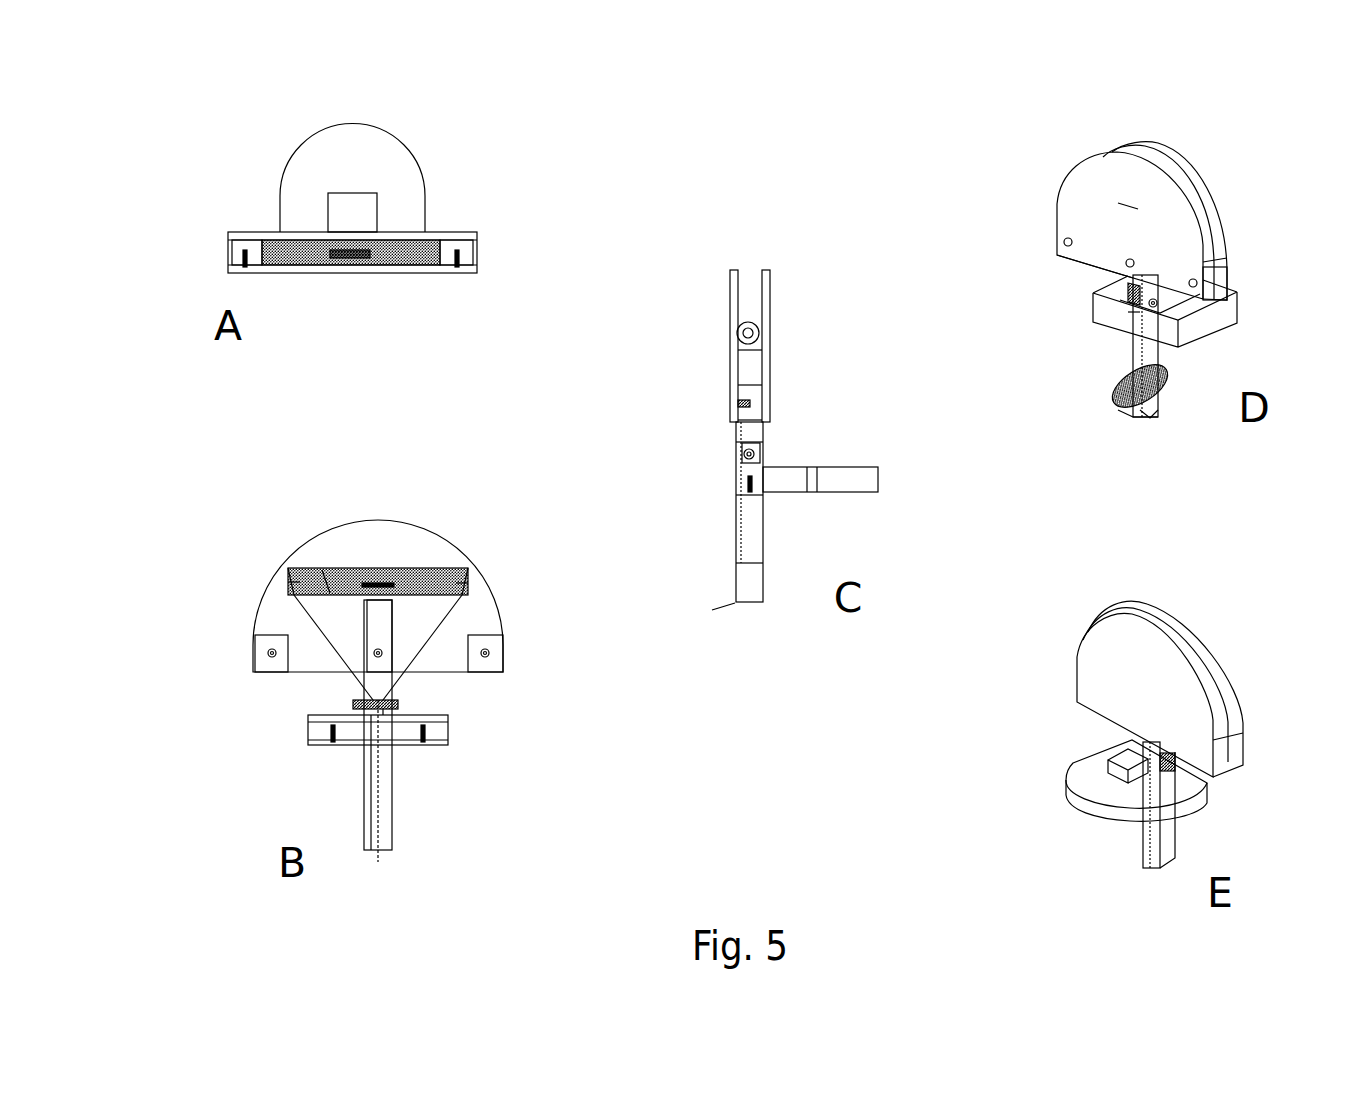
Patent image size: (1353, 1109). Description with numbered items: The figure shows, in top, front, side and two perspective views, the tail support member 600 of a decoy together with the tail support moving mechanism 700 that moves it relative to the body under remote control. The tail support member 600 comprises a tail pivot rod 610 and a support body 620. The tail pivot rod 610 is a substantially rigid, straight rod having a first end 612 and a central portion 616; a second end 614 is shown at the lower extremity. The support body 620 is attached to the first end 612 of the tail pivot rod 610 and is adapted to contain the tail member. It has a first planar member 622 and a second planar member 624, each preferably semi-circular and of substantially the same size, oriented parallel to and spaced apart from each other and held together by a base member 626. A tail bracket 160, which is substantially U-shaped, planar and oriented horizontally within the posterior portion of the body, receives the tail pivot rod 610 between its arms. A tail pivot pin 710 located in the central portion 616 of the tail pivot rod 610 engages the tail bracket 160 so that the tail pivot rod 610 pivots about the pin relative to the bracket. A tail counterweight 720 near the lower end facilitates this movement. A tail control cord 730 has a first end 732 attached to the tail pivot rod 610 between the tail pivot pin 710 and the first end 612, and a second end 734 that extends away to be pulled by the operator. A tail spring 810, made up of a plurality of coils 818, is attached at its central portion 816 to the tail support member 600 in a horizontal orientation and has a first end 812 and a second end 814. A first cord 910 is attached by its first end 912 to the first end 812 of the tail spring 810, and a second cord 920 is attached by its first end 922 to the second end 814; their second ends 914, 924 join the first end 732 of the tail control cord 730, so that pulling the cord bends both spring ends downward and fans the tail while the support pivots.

In FIG. 5A, the tail support member 600 is at (224, 215).
In FIG. 5B, the tail support member 600 is at (227, 652).
In FIG. 5C, the tail support member 600 is at (700, 362).
In FIG. 5D, the tail support member 600 is at (1030, 252).
In FIG. 5E, the tail support member 600 is at (1040, 712).
In FIG. 5A, the tail bracket 160 is at (395, 165).
In FIG. 5B, the tail bracket 160 is at (445, 732).
In FIG. 5C, the tail bracket 160 is at (828, 480).
In FIG. 5D, the tail bracket 160 is at (1230, 315).
In FIG. 5E, the tail bracket 160 is at (1085, 775).
In FIG. 5D, the support body 620 is at (1232, 217).
In FIG. 5A, the first planar member 622 is at (435, 270).
In FIG. 5B, the first planar member 622 is at (378, 583).
In FIG. 5C, the first planar member 622 is at (730, 272).
In FIG. 5D, the first planar member 622 is at (1087, 168).
In FIG. 5E, the first planar member 622 is at (1195, 632).
In FIG. 5A, the second planar member 624 is at (270, 232).
In FIG. 5C, the second planar member 624 is at (772, 272).
In FIG. 5D, the second planar member 624 is at (1180, 163).
In FIG. 5E, the second planar member 624 is at (1125, 650).
In FIG. 5C, the base member 626 is at (757, 407).
In FIG. 5D, the base member 626 is at (1218, 281).
In FIG. 5E, the base member 626 is at (1233, 755).
In FIG. 5D, the first end 612 is at (1130, 283).
In FIG. 5D, the shaft bottom end 614 is at (1150, 418).
In FIG. 5D, the central portion 616 is at (1135, 312).
In FIG. 5D, the tail support moving mechanism 700 is at (1080, 390).
In FIG. 5C, the tail pivot pin 710 is at (742, 456).
In FIG. 5D, the tail pivot pin 710 is at (1160, 305).
In FIG. 5D, the tail counterweight 720 is at (1160, 395).
In FIG. 5B, the tail control cord 730 is at (378, 787).
In FIG. 5C, the tail control cord 730 is at (720, 612).
In FIG. 5D, the tail control cord 730 is at (1130, 357).
In FIG. 5E, the tail control cord 730 is at (1150, 850).
In FIG. 5D, the first end 732 is at (1128, 302).
In FIG. 5D, the second end 734 is at (1130, 420).
In FIG. 5B, the tail pivot rod 610 is at (368, 794).
In FIG. 5C, the tail pivot rod 610 is at (749, 512).
In FIG. 5D, the tail pivot rod 610 is at (1150, 357).
In FIG. 5E, the tail pivot rod 610 is at (1167, 840).
In FIG. 5A, the tail spring 810 is at (305, 265).
In FIG. 5B, the tail spring 810 is at (420, 570).
In FIG. 5C, the tail spring 810 is at (748, 322).
In FIG. 5D, the tail spring 810 is at (1195, 210).
In FIG. 5E, the tail spring 810 is at (1210, 683).
In FIG. 5B, the first end 812 is at (292, 568).
In FIG. 5B, the second end 814 is at (462, 572).
In FIG. 5B, the central portion 816 is at (378, 583).
In FIG. 5B, the coils 818 is at (327, 580).
In FIG. 5B, the first cord 910 is at (330, 637).
In FIG. 5B, the first end 912 is at (285, 580).
In FIG. 5B, the second end 914 is at (373, 710).
In FIG. 5B, the second cord 920 is at (430, 633).
In FIG. 5B, the first end 922 is at (465, 583).
In FIG. 5B, the second end 924 is at (383, 712).